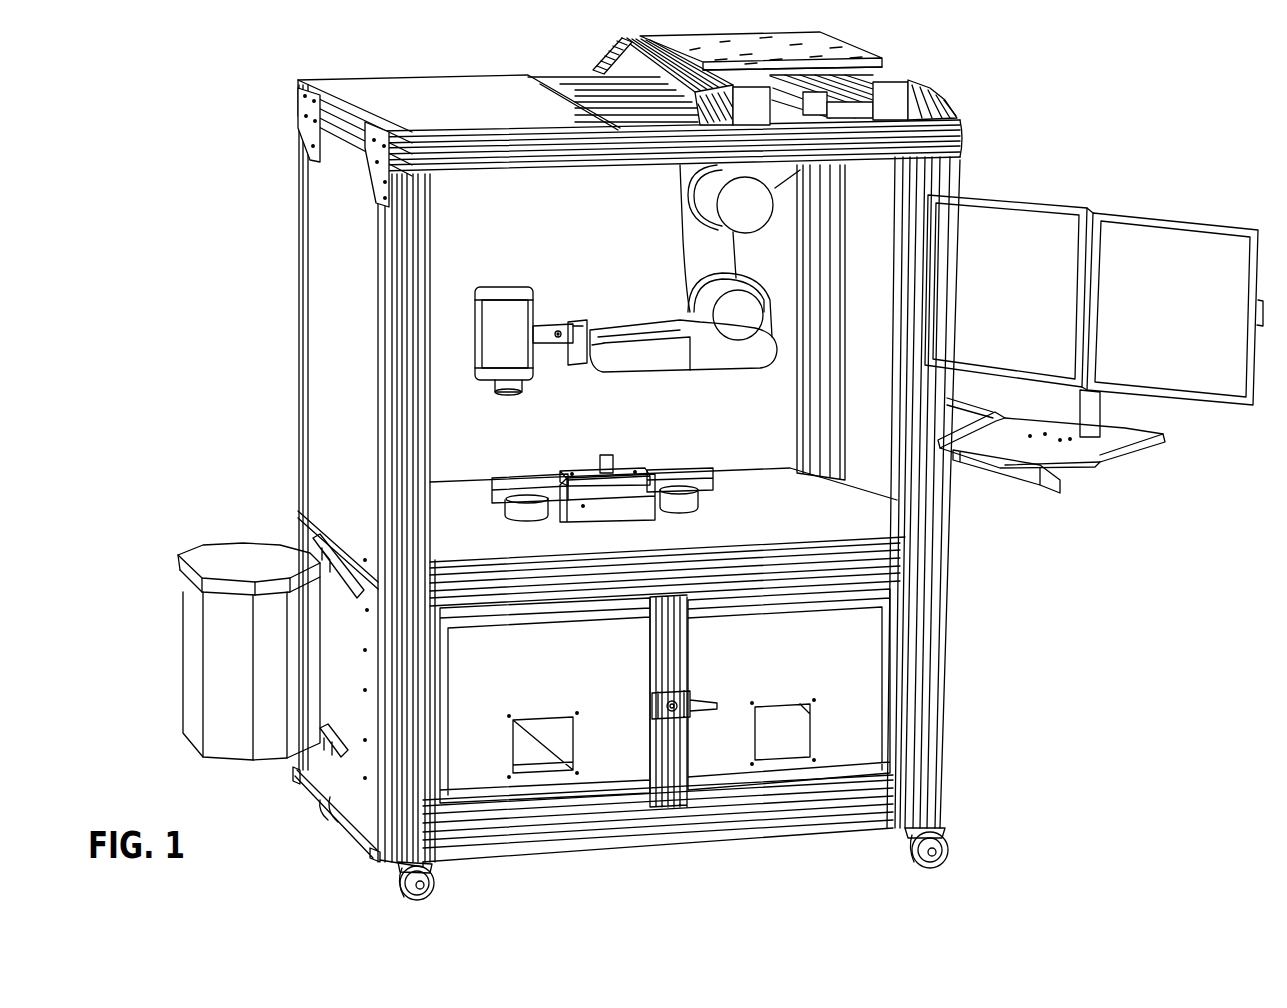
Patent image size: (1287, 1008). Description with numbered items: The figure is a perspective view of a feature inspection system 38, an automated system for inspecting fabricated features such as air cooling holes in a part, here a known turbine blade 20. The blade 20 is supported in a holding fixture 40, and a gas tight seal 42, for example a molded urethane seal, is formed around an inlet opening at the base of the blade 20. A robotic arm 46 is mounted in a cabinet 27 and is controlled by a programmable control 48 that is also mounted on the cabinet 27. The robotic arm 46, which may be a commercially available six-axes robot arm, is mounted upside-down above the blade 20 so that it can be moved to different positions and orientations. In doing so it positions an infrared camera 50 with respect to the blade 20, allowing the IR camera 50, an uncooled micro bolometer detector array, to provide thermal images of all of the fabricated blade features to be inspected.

The feature inspection system 38 is at (1030, 106).
The programmable control 48 is at (1005, 198).
The robotic arm 46 is at (677, 258).
The IR camera 50 is at (500, 287).
The gas tight seal 42 is at (575, 473).
The turbine blade 20 is at (602, 456).
The holding fixture 40 is at (640, 508).
The cabinet 27 is at (945, 664).